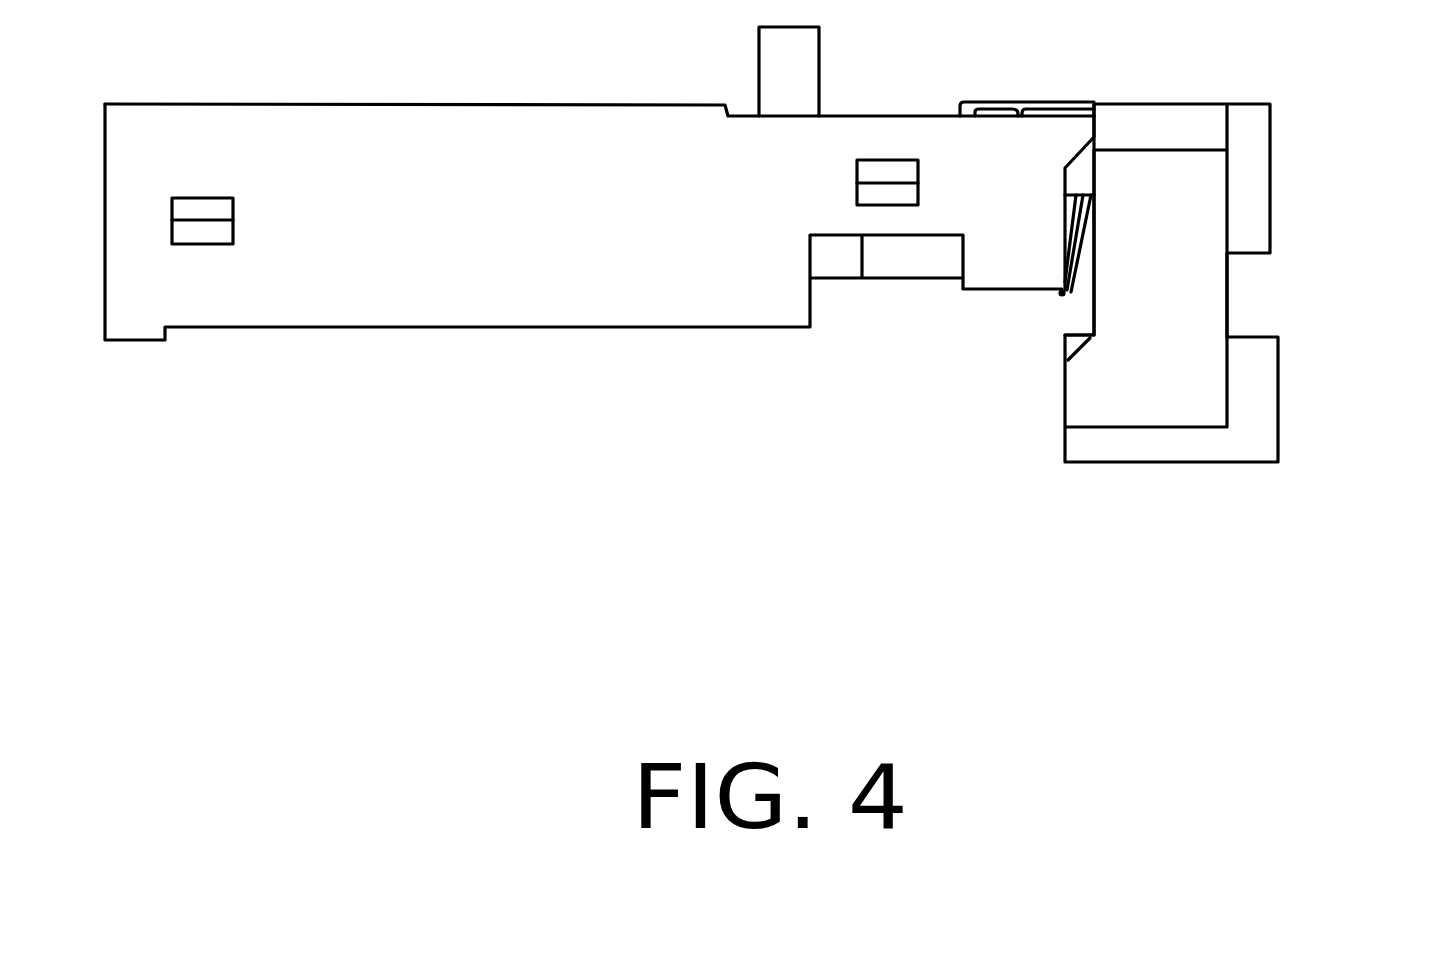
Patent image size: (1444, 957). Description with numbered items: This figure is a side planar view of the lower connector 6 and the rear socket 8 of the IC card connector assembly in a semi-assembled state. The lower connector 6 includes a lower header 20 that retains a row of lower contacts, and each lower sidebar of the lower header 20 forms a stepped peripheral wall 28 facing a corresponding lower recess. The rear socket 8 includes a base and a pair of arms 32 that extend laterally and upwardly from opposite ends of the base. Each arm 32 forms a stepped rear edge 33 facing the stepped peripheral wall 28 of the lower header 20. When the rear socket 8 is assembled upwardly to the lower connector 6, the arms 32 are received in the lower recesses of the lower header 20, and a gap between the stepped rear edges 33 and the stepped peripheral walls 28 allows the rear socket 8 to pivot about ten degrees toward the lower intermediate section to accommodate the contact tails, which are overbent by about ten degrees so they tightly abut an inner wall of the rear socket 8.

The lower connector 6 is at (519, 348).
The lower header 20 is at (988, 265).
The stepped peripheral wall 28 is at (1070, 233).
The arm 32 is at (1210, 283).
The stepped rear edge 33 is at (1090, 298).
The rear socket 8 is at (1309, 474).